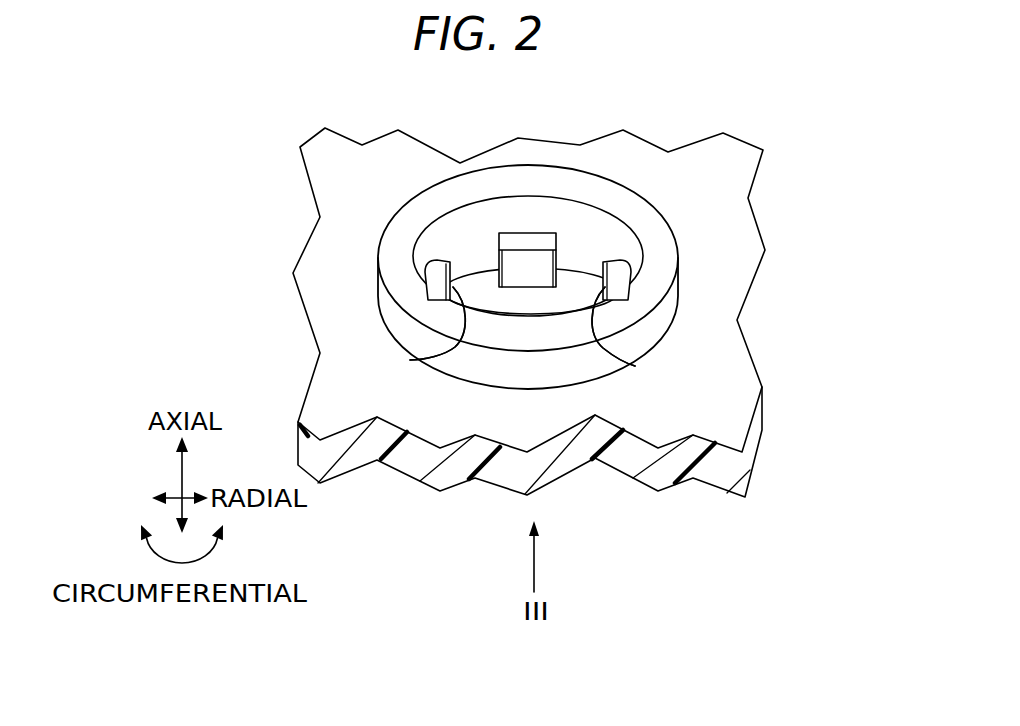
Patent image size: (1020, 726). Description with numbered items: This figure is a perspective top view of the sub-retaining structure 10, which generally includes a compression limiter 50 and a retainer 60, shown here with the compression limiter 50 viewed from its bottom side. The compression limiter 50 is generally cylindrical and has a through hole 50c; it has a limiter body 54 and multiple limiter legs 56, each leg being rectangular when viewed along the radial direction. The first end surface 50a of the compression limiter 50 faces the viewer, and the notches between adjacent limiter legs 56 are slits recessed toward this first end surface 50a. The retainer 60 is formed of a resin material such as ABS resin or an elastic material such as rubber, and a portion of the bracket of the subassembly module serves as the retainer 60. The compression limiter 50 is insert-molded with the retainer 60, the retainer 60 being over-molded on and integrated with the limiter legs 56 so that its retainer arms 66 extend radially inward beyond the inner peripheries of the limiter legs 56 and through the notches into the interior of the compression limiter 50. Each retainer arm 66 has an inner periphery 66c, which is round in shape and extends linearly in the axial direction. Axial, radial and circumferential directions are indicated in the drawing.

The sub-retaining structure 10 is at (851, 125).
The retainer 60 is at (737, 169).
The compression limiter 50 is at (541, 226).
The first end surface 50a is at (523, 183).
The through hole 50c is at (462, 232).
The limiter body 54 is at (577, 222).
The limiter legs 56 is at (472, 267).
The retainer arms 66 is at (440, 281).
The inner periphery 66c is at (528, 268).